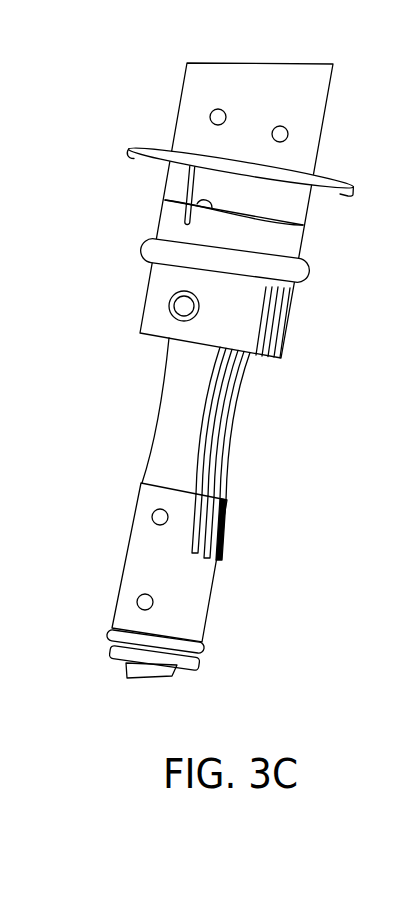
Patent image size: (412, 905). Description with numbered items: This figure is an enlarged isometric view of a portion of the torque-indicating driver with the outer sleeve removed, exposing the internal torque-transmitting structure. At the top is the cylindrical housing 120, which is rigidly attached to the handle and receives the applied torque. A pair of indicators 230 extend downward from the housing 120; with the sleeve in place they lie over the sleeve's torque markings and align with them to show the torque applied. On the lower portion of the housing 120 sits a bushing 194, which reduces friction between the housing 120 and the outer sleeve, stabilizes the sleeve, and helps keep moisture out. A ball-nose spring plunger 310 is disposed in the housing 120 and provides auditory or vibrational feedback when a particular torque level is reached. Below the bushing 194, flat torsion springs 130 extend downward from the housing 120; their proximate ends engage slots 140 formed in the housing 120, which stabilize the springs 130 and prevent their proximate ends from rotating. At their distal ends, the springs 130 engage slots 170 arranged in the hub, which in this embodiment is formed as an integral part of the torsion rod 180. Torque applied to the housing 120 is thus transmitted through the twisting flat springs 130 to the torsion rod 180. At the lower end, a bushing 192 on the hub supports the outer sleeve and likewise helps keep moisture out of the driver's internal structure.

The cylindrical housing 120 is at (323, 124).
The indicators 230 is at (188, 180).
The bushing 194 is at (311, 257).
The ball-nose spring plunger 310 is at (164, 292).
The slots 140 is at (292, 331).
The flat torsion springs 130 is at (204, 453).
The torsion rod 180 is at (150, 503).
The slots 170 is at (208, 543).
The bushing 192 is at (206, 640).